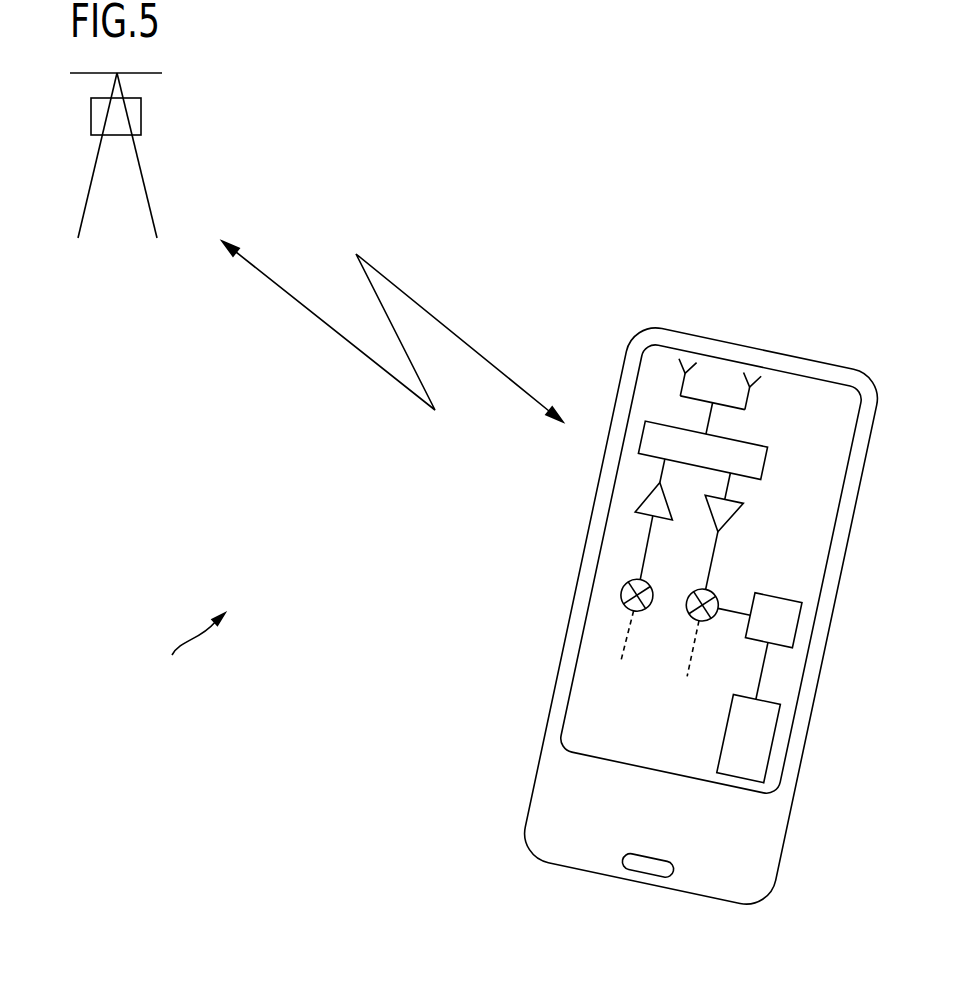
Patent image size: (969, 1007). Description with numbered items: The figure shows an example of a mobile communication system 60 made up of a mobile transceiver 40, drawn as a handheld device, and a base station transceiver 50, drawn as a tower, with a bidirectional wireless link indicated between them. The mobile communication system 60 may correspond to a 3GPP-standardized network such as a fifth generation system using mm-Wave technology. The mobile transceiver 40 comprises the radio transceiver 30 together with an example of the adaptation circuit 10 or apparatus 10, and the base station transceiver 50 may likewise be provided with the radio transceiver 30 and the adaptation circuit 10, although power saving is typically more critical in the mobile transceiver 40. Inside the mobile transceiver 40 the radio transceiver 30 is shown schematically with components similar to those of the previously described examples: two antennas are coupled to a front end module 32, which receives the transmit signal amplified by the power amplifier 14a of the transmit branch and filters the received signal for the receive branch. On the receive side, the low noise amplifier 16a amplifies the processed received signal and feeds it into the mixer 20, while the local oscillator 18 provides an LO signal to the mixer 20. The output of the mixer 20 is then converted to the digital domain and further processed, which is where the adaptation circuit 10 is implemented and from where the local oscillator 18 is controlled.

The adaptation circuit 10 is at (724, 738).
The power amplifier 14a is at (668, 507).
The low noise amplifier 16a is at (731, 517).
The local oscillator 18 is at (757, 640).
The mixer 20 is at (687, 598).
The radio transceiver 30 is at (141, 116).
The front end module 32 is at (765, 462).
The mobile transceiver 40 is at (577, 582).
The base station transceiver 50 is at (143, 182).
The mobile communication system 60 is at (191, 653).